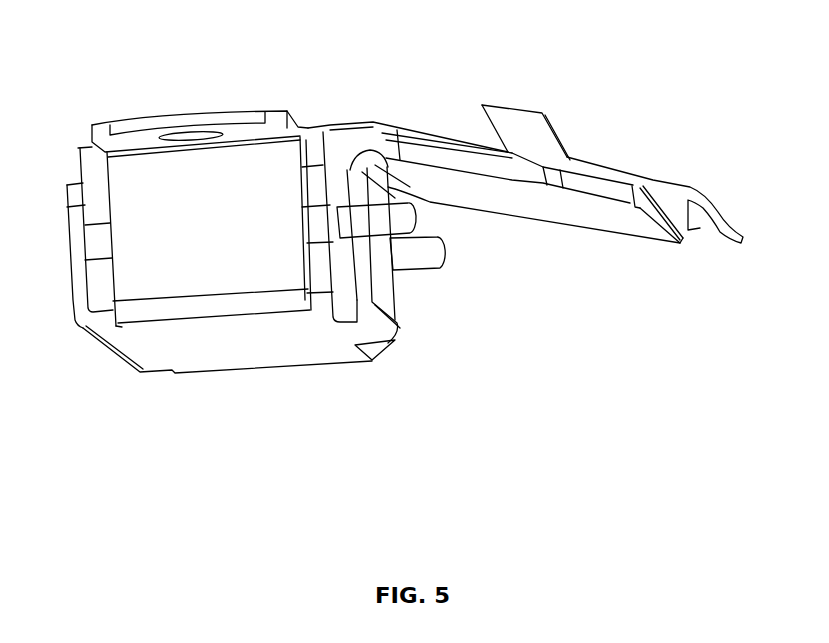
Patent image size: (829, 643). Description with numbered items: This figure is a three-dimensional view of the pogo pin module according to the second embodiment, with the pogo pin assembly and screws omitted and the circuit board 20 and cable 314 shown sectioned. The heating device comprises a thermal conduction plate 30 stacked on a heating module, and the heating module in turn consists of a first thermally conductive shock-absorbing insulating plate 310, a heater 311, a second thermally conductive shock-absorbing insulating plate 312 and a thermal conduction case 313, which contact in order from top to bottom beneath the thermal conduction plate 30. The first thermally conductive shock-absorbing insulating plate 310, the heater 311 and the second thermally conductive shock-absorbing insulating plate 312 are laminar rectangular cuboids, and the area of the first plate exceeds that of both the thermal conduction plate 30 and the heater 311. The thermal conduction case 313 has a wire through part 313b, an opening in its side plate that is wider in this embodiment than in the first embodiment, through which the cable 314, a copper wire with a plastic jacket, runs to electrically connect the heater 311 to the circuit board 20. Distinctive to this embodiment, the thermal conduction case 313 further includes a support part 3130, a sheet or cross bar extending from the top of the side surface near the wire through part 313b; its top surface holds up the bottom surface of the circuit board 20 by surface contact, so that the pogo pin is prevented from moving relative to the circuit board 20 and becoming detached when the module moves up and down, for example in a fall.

The circuit board 20 is at (693, 213).
The thermal conduction plate 30 is at (313, 140).
The first thermally conductive shock-absorbing insulating plate 310 is at (312, 183).
The heater 311 is at (100, 240).
The second thermally conductive shock-absorbing insulating plate 312 is at (317, 285).
The thermal conduction case 313 is at (154, 342).
The wire through part 313b is at (388, 340).
The cable 314 is at (422, 257).
The support part 3130 is at (540, 210).